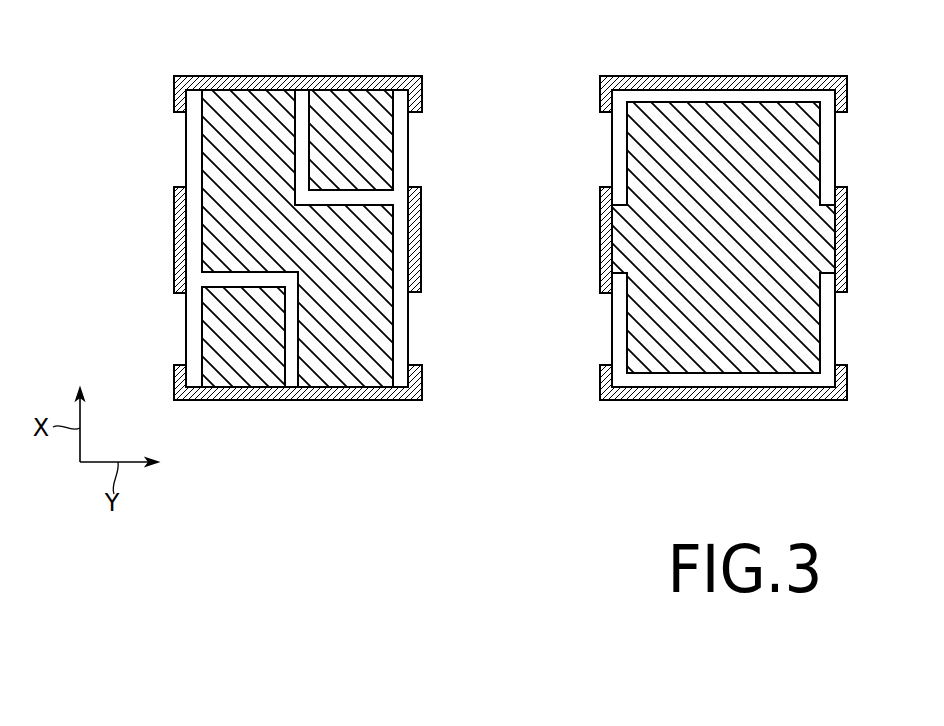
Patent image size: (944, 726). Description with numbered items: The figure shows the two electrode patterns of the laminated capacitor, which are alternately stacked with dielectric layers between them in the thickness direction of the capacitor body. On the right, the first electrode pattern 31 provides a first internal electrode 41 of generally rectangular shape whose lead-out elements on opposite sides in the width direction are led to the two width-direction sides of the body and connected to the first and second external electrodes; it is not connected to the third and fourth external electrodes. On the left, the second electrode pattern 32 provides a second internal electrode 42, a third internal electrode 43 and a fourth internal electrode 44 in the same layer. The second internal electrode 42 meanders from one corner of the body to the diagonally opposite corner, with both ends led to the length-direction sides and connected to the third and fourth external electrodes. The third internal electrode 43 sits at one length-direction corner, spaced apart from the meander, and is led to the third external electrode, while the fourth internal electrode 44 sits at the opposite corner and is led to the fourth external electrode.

The first electrode pattern 31 is at (523, 117).
The second electrode pattern 32 is at (99, 117).
The first internal electrode 41 is at (800, 315).
The second internal electrode 42 is at (373, 316).
The third internal electrode 43 is at (222, 333).
The fourth internal electrode 44 is at (373, 138).